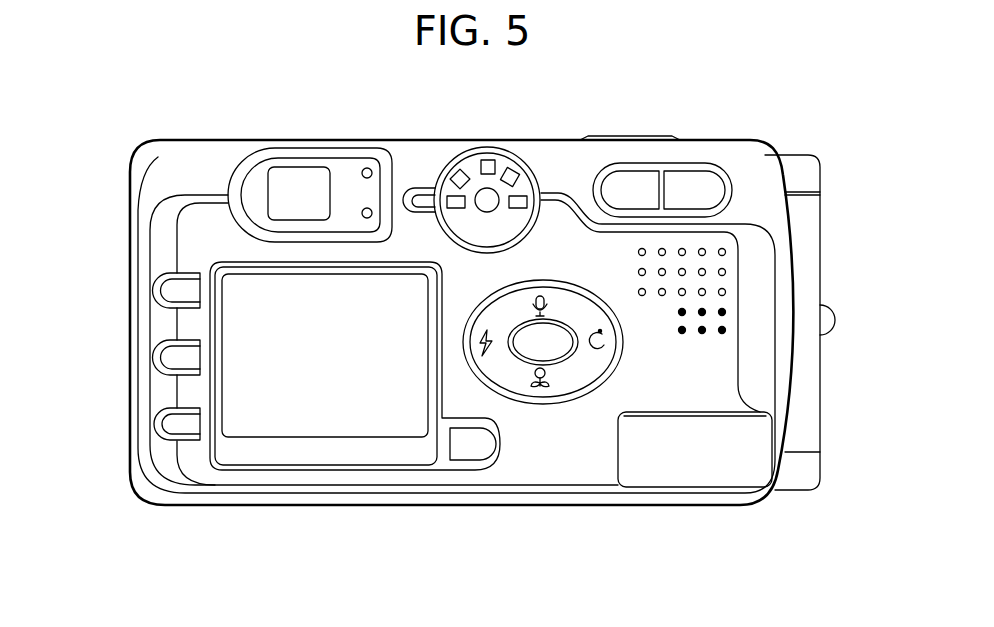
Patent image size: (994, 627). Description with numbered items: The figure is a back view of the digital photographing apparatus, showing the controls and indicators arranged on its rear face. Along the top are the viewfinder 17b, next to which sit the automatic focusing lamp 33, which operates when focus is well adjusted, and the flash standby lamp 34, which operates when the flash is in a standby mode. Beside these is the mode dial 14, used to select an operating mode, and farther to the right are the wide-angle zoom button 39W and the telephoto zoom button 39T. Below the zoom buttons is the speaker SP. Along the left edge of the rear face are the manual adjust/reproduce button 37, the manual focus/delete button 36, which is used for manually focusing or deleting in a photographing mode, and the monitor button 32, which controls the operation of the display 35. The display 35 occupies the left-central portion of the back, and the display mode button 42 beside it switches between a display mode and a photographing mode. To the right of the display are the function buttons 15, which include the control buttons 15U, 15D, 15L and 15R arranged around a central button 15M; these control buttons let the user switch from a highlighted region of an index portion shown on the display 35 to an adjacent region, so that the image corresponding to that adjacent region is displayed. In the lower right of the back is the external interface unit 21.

The viewfinder 17b is at (300, 178).
The automatic focusing lamp 33 is at (364, 168).
The flash standby lamp 34 is at (371, 209).
The mode dial 14 is at (497, 148).
The wide-angle zoom button 39W is at (630, 187).
The telephoto zoom button 39T is at (693, 187).
The speaker SP is at (726, 312).
The manual adjust/reproduce button 37 is at (163, 292).
The manual focus/delete button 36 is at (165, 357).
The monitor button 32 is at (165, 425).
The display 35 is at (320, 415).
The display mode button 42 is at (467, 450).
The function buttons 15 is at (572, 411).
The control button 15U is at (530, 299).
The control button 15L is at (482, 358).
The control button 15R is at (606, 342).
The menu/OK button 15M is at (563, 348).
The control button 15D is at (553, 378).
The external interface unit 21 is at (735, 467).